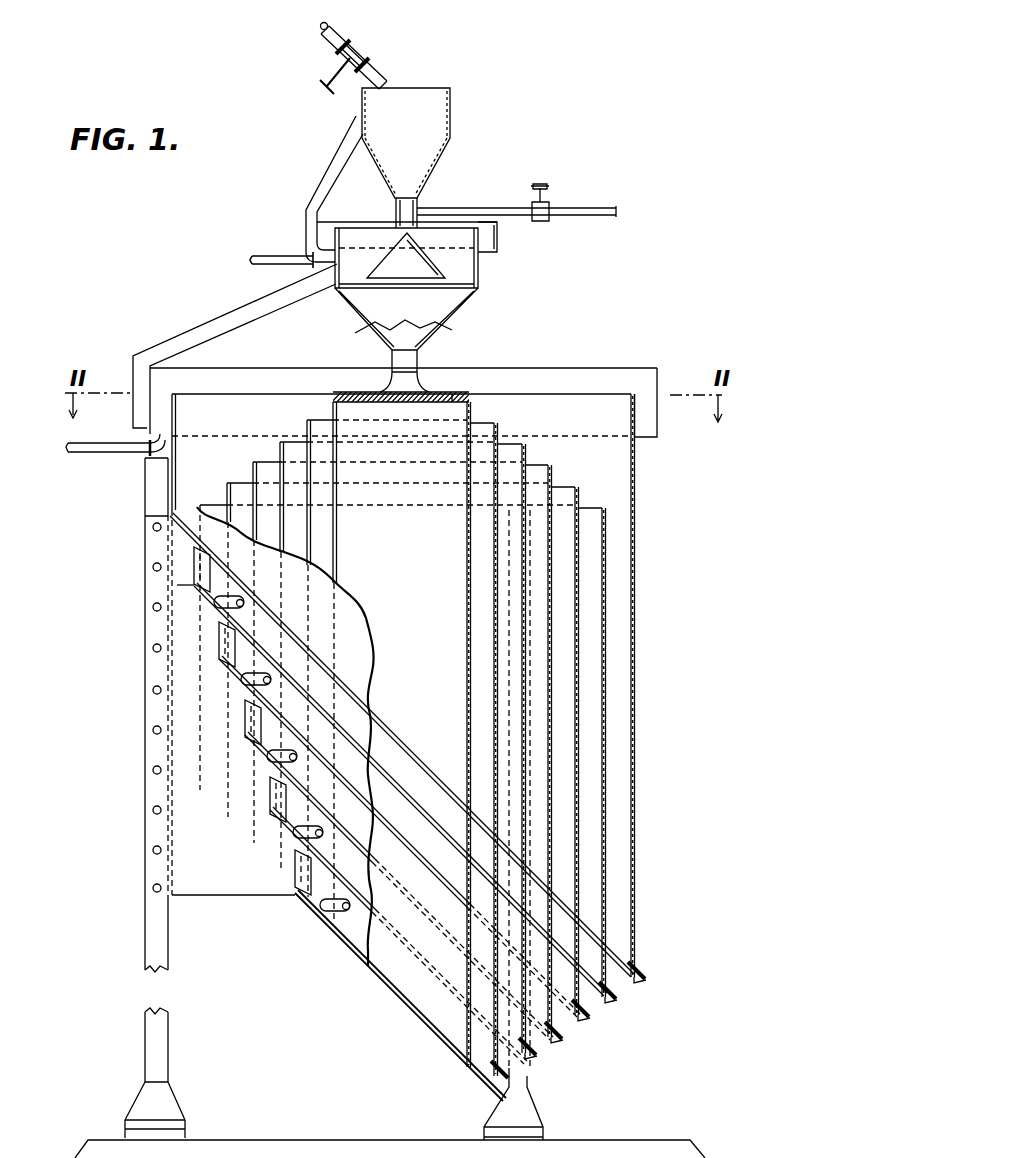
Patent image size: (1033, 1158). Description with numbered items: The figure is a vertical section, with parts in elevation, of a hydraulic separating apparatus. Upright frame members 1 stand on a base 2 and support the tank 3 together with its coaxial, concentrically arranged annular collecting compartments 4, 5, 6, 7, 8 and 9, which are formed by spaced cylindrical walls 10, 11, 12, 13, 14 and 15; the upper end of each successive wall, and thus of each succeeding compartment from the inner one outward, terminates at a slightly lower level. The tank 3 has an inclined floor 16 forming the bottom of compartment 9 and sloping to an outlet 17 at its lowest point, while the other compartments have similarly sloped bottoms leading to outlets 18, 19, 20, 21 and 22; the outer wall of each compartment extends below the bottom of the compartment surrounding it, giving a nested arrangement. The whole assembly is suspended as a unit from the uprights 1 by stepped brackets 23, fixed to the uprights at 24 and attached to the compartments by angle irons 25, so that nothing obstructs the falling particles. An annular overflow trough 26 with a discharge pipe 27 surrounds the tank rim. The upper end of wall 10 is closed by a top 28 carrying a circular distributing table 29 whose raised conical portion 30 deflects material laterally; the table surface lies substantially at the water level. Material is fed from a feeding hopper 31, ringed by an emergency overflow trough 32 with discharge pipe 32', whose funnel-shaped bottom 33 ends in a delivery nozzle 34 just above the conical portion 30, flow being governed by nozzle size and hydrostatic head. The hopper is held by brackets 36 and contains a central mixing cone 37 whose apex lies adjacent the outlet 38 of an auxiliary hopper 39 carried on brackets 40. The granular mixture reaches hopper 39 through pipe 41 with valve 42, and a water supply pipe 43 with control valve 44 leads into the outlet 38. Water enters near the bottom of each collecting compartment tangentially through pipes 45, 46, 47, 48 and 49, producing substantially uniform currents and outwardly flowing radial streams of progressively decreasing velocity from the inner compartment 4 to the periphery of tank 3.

The upright frame member 1 is at (140, 1042).
The base 2 is at (268, 1139).
The tank 3 is at (636, 568).
The collecting compartment 4 is at (485, 427).
The collecting compartment 5 is at (518, 447).
The collecting compartment 6 is at (545, 472).
The collecting compartment 7 is at (567, 497).
The collecting compartment 8 is at (602, 500).
The collecting compartment 9 is at (617, 530).
The cylindrical wall 10 is at (467, 522).
The cylindrical wall 11 is at (494, 566).
The cylindrical wall 12 is at (522, 600).
The cylindrical wall 13 is at (548, 640).
The cylindrical wall 14 is at (575, 695).
The cylindrical wall 15 is at (602, 738).
The inclined floor 16 is at (350, 692).
The outlet 17 is at (640, 993).
The outlet 18 is at (610, 1015).
The outlet 19 is at (583, 1033).
The outlet 20 is at (562, 1052).
The outlet 21 is at (530, 1075).
The outlet 22 is at (513, 1097).
The bracket 23 is at (210, 895).
The bracket attachment 24 is at (153, 730).
The angle iron 25 is at (192, 563).
The annular overflow trough 26 is at (640, 380).
The discharge pipe 27 is at (112, 452).
The top 28 is at (418, 402).
The distributing disk or table 29 is at (452, 395).
The raised conical portion 30 is at (387, 380).
The feeding hopper 31 is at (482, 275).
The emergency overflow trough 32 is at (534, 237).
The discharge pipe 32' is at (271, 239).
The funnel-shaped bottom 33 is at (468, 308).
The delivery nozzle 34 is at (393, 362).
The bracket 36 is at (185, 333).
The mixing cone 37 is at (425, 258).
The outlet 38 is at (396, 210).
The auxiliary hopper 39 is at (452, 108).
The bracket 40 is at (340, 148).
The pipe 41 is at (345, 33).
The valve 42 is at (340, 72).
The water supply pipe 43 is at (462, 208).
The control valve 44 is at (548, 205).
The pipe 45 is at (322, 905).
The pipe 46 is at (295, 832).
The pipe 47 is at (270, 756).
The pipe 48 is at (255, 679).
The pipe 49 is at (228, 600).